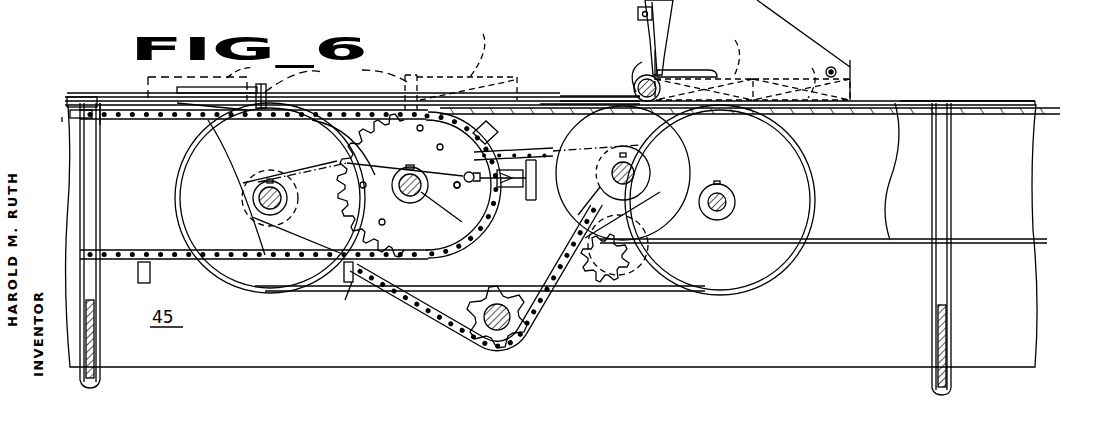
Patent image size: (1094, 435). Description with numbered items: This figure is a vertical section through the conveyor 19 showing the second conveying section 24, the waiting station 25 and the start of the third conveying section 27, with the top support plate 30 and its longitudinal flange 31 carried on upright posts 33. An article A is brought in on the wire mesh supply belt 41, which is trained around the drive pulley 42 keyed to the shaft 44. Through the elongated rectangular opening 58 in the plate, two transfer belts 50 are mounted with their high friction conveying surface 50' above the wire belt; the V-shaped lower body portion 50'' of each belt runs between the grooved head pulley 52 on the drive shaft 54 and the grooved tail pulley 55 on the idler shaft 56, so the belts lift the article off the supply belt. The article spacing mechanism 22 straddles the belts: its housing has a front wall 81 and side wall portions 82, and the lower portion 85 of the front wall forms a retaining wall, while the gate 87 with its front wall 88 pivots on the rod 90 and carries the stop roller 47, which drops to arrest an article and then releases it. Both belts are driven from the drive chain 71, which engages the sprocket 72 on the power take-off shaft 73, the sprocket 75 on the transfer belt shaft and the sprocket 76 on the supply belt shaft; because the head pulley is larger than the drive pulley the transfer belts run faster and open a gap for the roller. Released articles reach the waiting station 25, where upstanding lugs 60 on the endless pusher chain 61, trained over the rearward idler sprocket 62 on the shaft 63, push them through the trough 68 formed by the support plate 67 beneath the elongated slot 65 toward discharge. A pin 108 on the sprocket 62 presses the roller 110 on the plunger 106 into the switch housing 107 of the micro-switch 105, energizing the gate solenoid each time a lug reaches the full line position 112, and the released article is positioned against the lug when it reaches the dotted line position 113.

The conveyor 19 is at (104, 94).
The waiting station 25 is at (172, 89).
The elongated slot 65 is at (78, 101).
The trough 68 is at (72, 115).
The support plate 67 is at (70, 118).
The upright posts 33 is at (90, 183).
The third conveying section 27 is at (140, 122).
The transfer belts 50 is at (314, 150).
The elongated rectangular opening 58 is at (812, 116).
The grooved head pulley 52 is at (195, 195).
The drive shaft 54 is at (258, 202).
The sprocket 75 is at (291, 207).
The endless pusher chain 61 is at (310, 120).
The pin 108 is at (392, 185).
The rearward idler sprocket 62 is at (450, 217).
The shaft 63 is at (470, 207).
The plunger 106 is at (470, 150).
The roller 110 is at (517, 195).
The micro-switch 105 is at (538, 164).
The switch housing 107 is at (538, 188).
The full line position 112 is at (497, 127).
The upstanding lugs 60 is at (152, 270).
The dotted line position 113 is at (413, 100).
The article A is at (521, 62).
The drive pulley 42 is at (672, 147).
The sprocket 76 is at (634, 150).
The shaft 44 is at (636, 173).
The grooved tail pulley 55 is at (810, 172).
The idler shaft 56 is at (736, 203).
The endless supply belt 41 is at (887, 171).
The lower body portion 50'' is at (649, 252).
The conveying surface 50' is at (752, 74).
The sprocket 72 is at (530, 318).
The power take-off shaft 73 is at (503, 330).
The drive chain 71 is at (432, 312).
The stop roller 47 is at (638, 90).
The front wall 81 is at (676, 22).
The gate 87 is at (648, 48).
The front wall 88 is at (648, 28).
The lower portion 85 is at (680, 77).
The side wall portions 82 is at (727, 12).
The second conveying section 24 is at (564, 108).
The article spacing mechanism 22 is at (808, 38).
The rod 90 is at (838, 70).
The longitudinal flange 31 is at (954, 100).
The top support plate 30 is at (1022, 100).